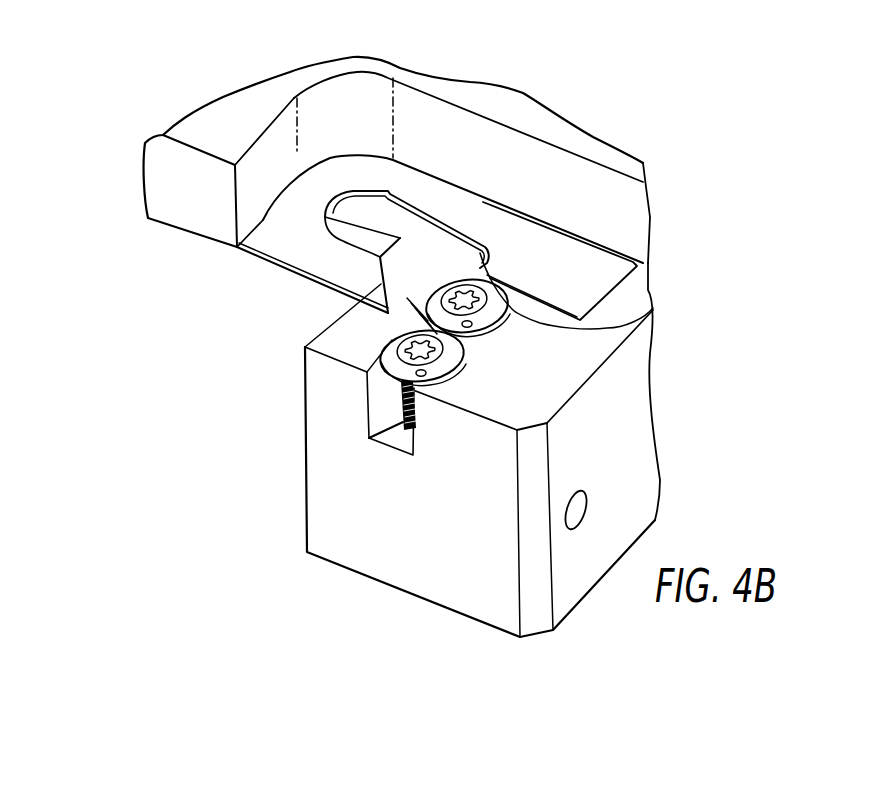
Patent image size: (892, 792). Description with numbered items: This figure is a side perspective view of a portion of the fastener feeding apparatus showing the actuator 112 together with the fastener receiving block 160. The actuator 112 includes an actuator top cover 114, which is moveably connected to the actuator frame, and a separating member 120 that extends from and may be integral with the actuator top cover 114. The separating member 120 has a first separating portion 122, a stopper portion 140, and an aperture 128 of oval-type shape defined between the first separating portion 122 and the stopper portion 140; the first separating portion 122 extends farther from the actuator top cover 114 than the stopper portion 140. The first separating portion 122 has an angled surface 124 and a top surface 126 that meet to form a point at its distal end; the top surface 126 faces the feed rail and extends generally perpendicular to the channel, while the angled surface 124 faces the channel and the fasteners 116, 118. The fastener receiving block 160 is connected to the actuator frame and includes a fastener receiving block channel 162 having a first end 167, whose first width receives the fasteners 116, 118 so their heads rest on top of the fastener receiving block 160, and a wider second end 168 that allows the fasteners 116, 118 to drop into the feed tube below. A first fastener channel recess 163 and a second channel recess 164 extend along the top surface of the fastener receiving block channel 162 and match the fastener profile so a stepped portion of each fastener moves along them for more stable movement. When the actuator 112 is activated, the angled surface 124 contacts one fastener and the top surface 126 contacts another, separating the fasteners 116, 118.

The actuator 112 is at (361, 175).
The actuator top cover 114 is at (195, 130).
The fastener 116 is at (490, 286).
The fastener 118 is at (402, 396).
The separating member 120 is at (428, 198).
The first separating portion 122 is at (261, 272).
The angled surface 124 is at (380, 282).
The top surface 126 is at (372, 364).
The aperture 128 is at (355, 205).
The stopper portion 140 is at (557, 302).
The fastener receiving block 160 is at (450, 587).
The fastener receiving block channel 162 is at (366, 452).
The first fastener channel recess 163 is at (383, 362).
The second channel recess 164 is at (422, 402).
The first end 167 is at (400, 432).
The second end 168 is at (653, 309).